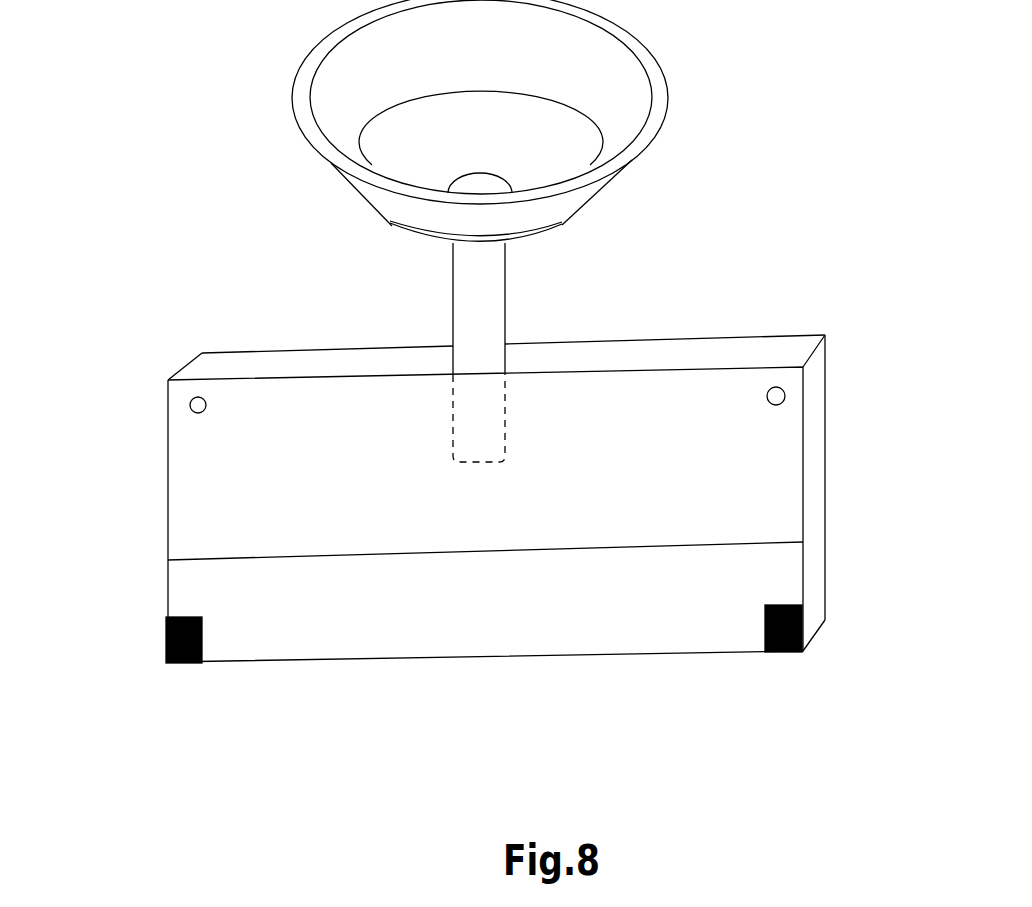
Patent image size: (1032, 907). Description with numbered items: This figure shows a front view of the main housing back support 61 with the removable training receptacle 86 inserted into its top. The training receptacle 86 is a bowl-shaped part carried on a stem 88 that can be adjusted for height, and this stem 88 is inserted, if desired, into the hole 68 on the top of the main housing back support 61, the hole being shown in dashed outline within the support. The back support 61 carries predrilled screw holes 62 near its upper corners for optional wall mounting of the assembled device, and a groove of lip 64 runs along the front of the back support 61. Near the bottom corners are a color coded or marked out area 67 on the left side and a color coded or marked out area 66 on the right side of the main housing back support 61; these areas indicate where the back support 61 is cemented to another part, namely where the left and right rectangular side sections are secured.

The main housing back support 61 is at (500, 502).
The predrilled screw holes 62 is at (190, 405).
The groove of lip 64 is at (785, 568).
The color coded or marked out area on right side 66 is at (802, 640).
The color coded or marked out area on left side 67 is at (165, 647).
The hole 68 is at (485, 407).
The training receptacle 86 is at (672, 124).
The stem of removable training receptacle 88 is at (490, 283).